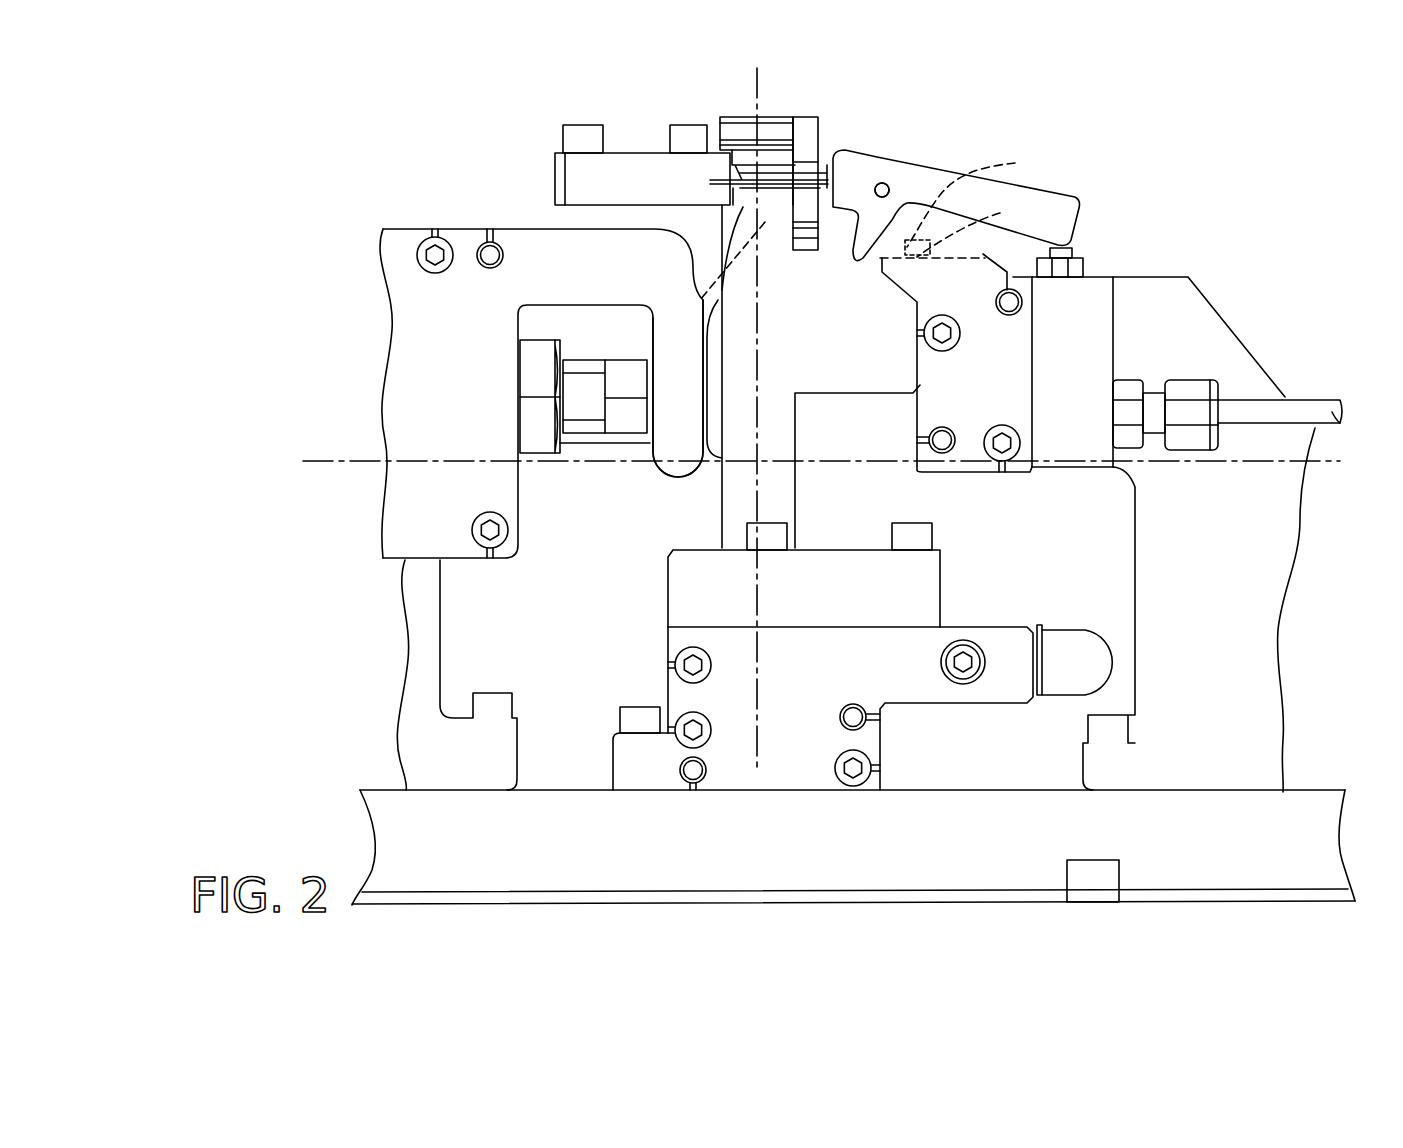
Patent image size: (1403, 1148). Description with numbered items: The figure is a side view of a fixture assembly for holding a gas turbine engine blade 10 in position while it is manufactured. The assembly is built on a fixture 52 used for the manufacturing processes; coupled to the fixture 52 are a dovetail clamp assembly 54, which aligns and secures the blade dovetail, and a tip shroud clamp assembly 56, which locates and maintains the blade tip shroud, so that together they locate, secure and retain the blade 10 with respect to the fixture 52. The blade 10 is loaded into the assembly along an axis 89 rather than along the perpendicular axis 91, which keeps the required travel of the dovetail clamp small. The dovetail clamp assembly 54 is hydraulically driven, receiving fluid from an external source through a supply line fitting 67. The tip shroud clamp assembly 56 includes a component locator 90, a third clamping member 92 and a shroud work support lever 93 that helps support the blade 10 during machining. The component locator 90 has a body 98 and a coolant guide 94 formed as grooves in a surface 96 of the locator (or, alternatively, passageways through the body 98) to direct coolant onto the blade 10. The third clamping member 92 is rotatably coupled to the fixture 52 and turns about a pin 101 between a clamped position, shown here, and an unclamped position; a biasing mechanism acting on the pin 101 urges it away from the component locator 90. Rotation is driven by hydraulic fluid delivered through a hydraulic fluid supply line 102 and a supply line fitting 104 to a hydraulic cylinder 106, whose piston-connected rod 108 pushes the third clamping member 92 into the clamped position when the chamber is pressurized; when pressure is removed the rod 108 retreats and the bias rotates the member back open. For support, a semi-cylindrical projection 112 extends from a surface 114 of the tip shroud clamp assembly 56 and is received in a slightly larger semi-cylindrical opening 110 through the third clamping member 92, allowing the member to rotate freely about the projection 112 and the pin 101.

The turbine blade 10 is at (737, 502).
The fixture 52 is at (1210, 340).
The dovetail clamp assembly 54 is at (828, 626).
The tip shroud clamp assembly 56 is at (956, 268).
The supply line fitting 67 is at (1072, 653).
The axis 89 is at (757, 98).
The component locator 90 is at (649, 160).
The axis 91 is at (343, 463).
The third clamping member 92 is at (956, 182).
The shroud work support lever 93 is at (673, 448).
The coolant guide 94 is at (653, 150).
The surface 96 is at (617, 150).
The body 98 is at (577, 178).
The pin 101 is at (887, 188).
The hydraulic fluid supply line 102 is at (1310, 397).
The supply line fitting 104 is at (1200, 376).
The hydraulic cylinder 106 is at (1113, 331).
The rod 108 is at (1068, 256).
The semi-cylindrical opening 110 is at (985, 201).
The semi-cylindrical projection 112 is at (983, 228).
The surface 114 is at (838, 207).